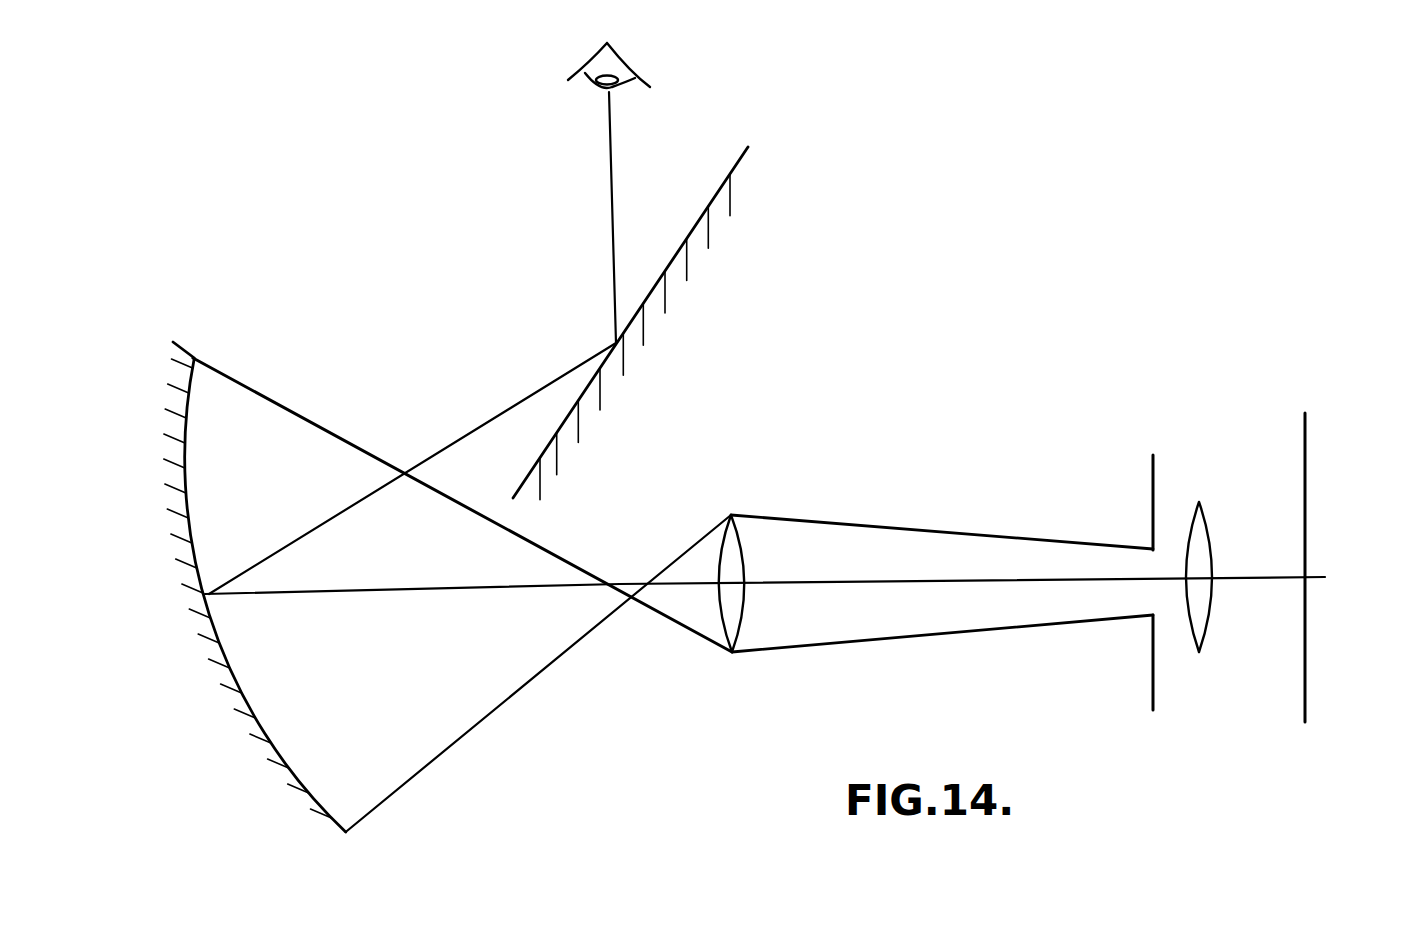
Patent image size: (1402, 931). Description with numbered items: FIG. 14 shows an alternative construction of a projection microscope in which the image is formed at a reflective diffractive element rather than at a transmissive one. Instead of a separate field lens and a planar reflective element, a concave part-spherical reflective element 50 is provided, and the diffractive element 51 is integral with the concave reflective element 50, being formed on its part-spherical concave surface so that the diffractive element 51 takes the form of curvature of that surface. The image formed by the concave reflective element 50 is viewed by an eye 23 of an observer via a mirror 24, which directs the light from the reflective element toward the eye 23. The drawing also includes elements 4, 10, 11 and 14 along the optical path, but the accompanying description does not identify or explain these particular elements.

The image plane 4 is at (1312, 695).
The lens 10 is at (1199, 502).
The lens 11 is at (731, 515).
The aperture stop 14 is at (1152, 488).
The eye 23 is at (618, 68).
The mirror 24 is at (628, 326).
The concave part-spherical reflective element 50 is at (284, 777).
The diffractive element 51 is at (305, 775).